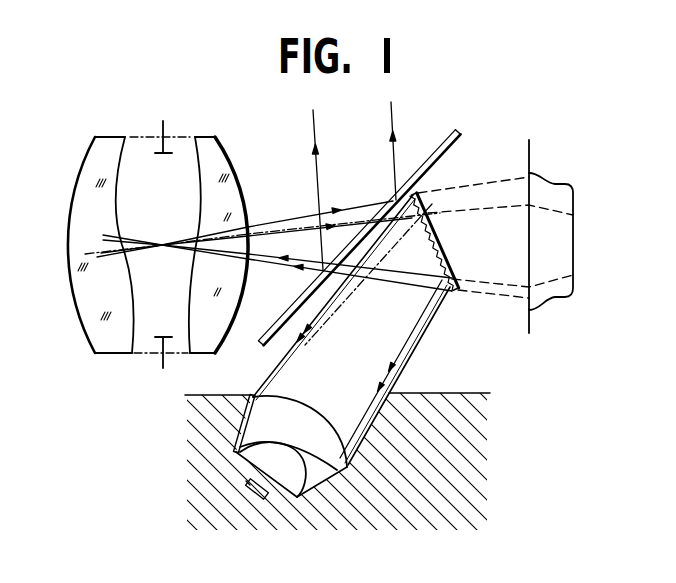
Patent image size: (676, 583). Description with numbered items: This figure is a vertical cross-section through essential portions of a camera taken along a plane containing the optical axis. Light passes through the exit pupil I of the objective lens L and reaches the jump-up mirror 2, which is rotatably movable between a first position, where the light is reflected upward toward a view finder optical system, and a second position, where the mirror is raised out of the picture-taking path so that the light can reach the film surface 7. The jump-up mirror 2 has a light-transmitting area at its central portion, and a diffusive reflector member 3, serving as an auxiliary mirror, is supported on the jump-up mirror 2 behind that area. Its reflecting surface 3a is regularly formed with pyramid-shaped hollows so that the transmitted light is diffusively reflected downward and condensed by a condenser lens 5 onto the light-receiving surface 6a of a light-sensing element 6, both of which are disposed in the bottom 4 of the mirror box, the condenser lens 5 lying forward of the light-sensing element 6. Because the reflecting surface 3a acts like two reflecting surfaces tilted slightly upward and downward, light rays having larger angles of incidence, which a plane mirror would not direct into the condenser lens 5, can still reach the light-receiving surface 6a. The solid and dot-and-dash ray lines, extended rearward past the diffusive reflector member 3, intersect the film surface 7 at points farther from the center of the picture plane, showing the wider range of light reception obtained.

The objective lens L is at (95, 168).
The exit pupil I is at (165, 127).
The jump-up mirror 2 is at (462, 131).
The diffusive reflector member 3 is at (435, 230).
The reflecting surface 3a is at (435, 258).
The bottom of mirror box 4 is at (455, 393).
The condenser lens 5 is at (336, 448).
The light-sensing element 6 is at (263, 498).
The light-receiving surface 6a is at (249, 484).
The film surface 7 is at (529, 321).